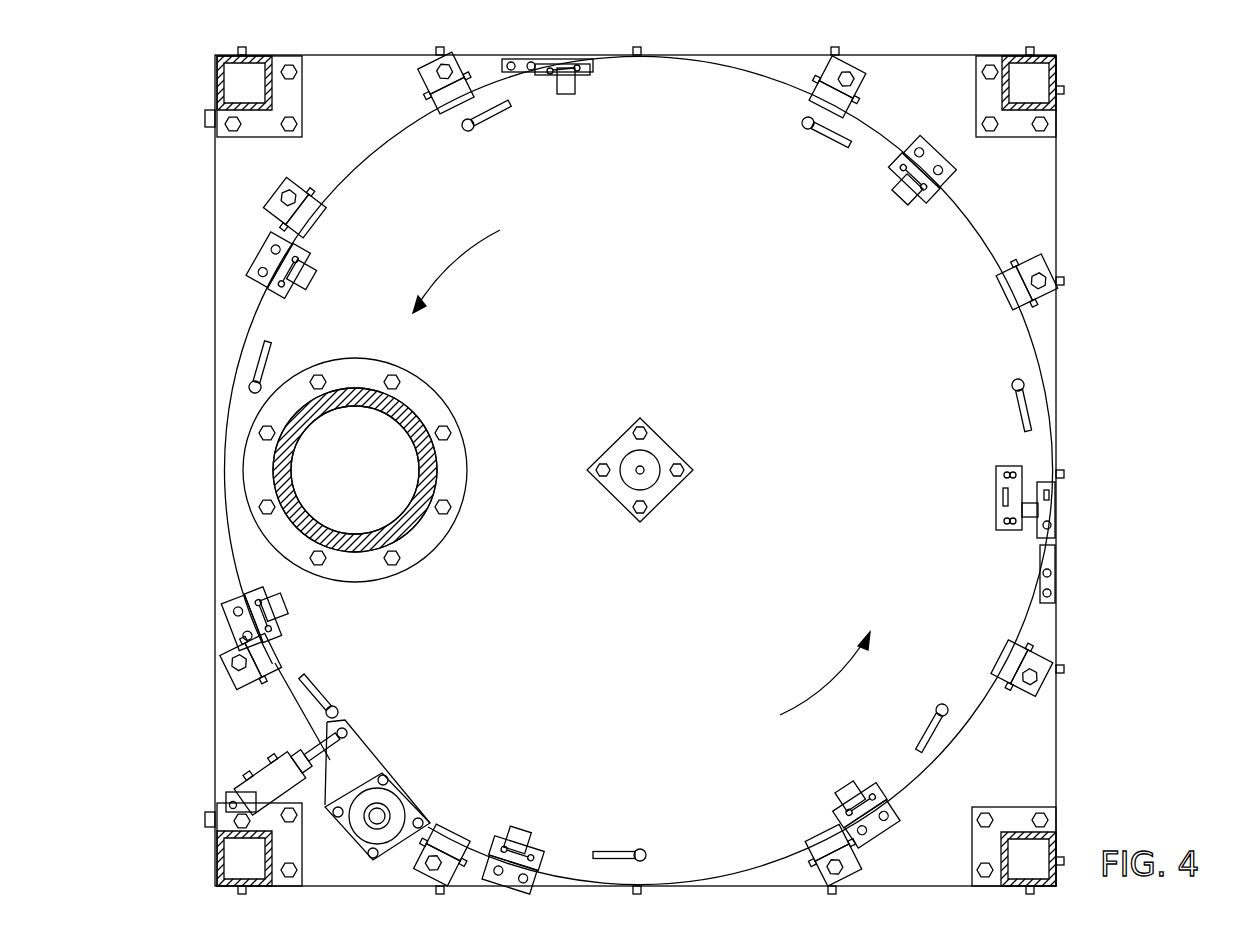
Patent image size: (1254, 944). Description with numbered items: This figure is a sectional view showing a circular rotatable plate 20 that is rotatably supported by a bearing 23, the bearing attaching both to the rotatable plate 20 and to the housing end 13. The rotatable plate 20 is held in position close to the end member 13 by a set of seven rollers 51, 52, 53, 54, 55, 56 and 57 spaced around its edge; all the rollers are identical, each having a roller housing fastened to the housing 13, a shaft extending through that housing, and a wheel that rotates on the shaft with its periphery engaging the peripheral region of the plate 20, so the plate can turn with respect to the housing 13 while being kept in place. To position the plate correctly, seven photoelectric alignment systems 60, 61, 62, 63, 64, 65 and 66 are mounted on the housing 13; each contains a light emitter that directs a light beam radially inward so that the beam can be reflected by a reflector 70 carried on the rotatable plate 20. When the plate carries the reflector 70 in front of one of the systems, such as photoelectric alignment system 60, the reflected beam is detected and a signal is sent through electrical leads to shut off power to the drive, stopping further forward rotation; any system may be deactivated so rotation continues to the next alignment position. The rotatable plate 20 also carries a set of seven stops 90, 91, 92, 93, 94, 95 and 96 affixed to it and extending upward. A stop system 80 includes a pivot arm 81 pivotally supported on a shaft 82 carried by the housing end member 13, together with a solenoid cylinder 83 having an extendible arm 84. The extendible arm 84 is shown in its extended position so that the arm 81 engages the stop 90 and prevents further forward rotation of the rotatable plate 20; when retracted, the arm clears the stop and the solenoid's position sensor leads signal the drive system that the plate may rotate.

The housing end 13 is at (1048, 212).
The rotatable plate 20 is at (698, 208).
The bearing 23 is at (660, 452).
The roller 51 is at (1016, 270).
The roller 52 is at (850, 80).
The roller 53 is at (448, 76).
The roller 54 is at (292, 196).
The roller 55 is at (236, 682).
The roller 56 is at (445, 868).
The roller 57 is at (850, 870).
The photoelectric alignment system 60 is at (1048, 506).
The photoelectric alignment system 61 is at (910, 152).
The photoelectric alignment system 62 is at (558, 70).
The photoelectric alignment system 63 is at (252, 276).
The photoelectric alignment system 64 is at (236, 606).
The photoelectric alignment system 65 is at (507, 880).
The photoelectric alignment system 66 is at (897, 812).
The reflector 70 is at (1020, 468).
The stop system 80 is at (320, 762).
The pivot arm 81 is at (366, 764).
The shaft 82 is at (388, 814).
The solenoid cylinder 83 is at (258, 786).
The extendible arm 84 is at (302, 748).
The stop 90 is at (338, 710).
The stop 91 is at (264, 386).
The stop 92 is at (470, 131).
The stop 93 is at (806, 130).
The stop 94 is at (1012, 383).
The stop 95 is at (937, 708).
The stop 96 is at (648, 855).